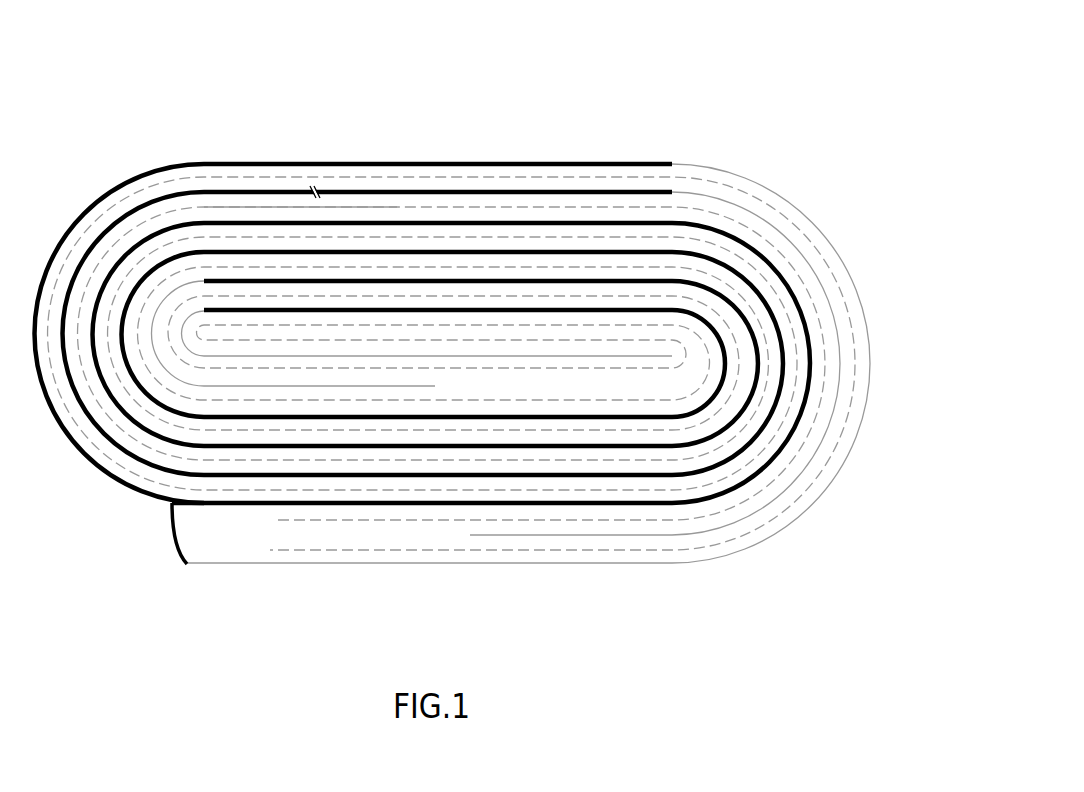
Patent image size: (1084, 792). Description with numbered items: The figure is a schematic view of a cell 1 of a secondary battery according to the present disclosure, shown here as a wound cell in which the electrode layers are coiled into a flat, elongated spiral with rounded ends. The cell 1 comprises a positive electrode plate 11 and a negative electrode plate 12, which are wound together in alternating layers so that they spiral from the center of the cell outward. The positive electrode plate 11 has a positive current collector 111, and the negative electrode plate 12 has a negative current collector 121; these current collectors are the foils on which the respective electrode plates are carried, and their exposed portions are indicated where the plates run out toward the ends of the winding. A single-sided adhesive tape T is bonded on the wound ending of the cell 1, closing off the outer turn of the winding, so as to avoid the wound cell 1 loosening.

The cell 1 is at (453, 316).
The positive electrode plate 11 is at (453, 378).
The positive current collector 111 is at (563, 563).
The negative electrode plate 12 is at (452, 371).
The negative current collector 121 is at (670, 535).
The single-sided adhesive tape T is at (177, 542).